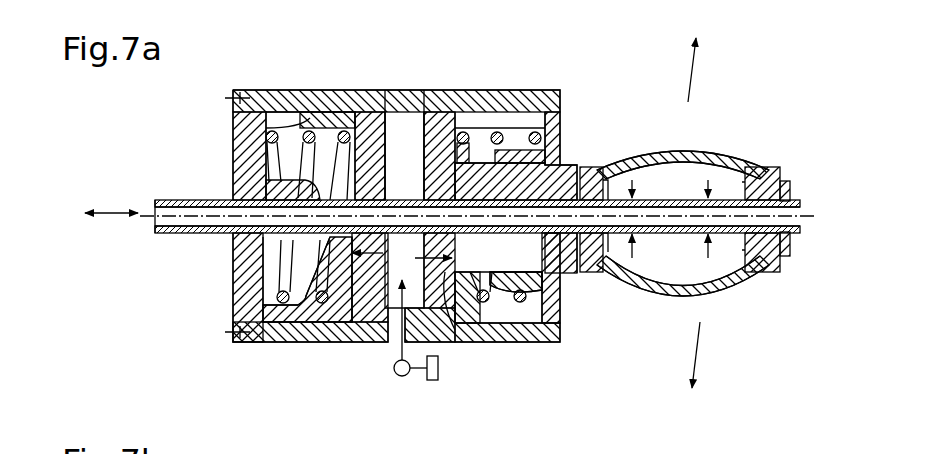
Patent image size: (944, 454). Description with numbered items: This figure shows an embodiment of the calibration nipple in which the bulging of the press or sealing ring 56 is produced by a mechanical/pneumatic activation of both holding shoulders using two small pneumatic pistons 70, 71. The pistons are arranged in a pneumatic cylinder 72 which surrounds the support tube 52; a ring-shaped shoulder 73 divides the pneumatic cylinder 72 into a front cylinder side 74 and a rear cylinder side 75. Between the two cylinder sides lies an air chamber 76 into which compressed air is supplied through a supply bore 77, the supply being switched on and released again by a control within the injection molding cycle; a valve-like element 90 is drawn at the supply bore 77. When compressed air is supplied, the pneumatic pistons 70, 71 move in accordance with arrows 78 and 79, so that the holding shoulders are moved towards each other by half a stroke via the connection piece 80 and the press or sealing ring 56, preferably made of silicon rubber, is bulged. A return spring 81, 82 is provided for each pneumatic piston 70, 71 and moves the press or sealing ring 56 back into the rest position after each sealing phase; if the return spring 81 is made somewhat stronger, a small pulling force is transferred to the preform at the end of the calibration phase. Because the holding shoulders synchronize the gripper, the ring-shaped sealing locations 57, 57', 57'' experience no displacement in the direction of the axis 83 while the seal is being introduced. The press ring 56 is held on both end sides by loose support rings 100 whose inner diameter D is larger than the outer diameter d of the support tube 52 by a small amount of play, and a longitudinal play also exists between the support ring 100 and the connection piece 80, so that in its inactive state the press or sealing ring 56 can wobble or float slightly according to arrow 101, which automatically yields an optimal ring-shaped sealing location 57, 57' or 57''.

The support tube 52 is at (193, 236).
The press or sealing ring 56 is at (722, 290).
The sealing location 57 is at (683, 214).
The sealing location 57' is at (641, 119).
The sealing location 57'' is at (726, 123).
The pneumatic piston 70 is at (495, 345).
The pneumatic piston 71 is at (300, 330).
The pneumatic cylinder 72 is at (548, 90).
The ring-shaped shoulder 73 is at (392, 112).
The front cylinder side 74 is at (545, 165).
The rear cylinder side 75 is at (385, 90).
The air chamber 76 is at (415, 170).
The supply bore 77 is at (396, 352).
The arrow 78 is at (448, 340).
The arrow 79 is at (335, 345).
The connection piece 80 is at (578, 172).
The return spring 81 is at (535, 125).
The return spring 82 is at (282, 120).
The axis 83 is at (808, 200).
The valve 90 is at (433, 380).
The support ring 100 is at (585, 272).
The arrow 101 is at (697, 350).
The inner diameter D is at (642, 216).
The outer diameter d is at (700, 216).